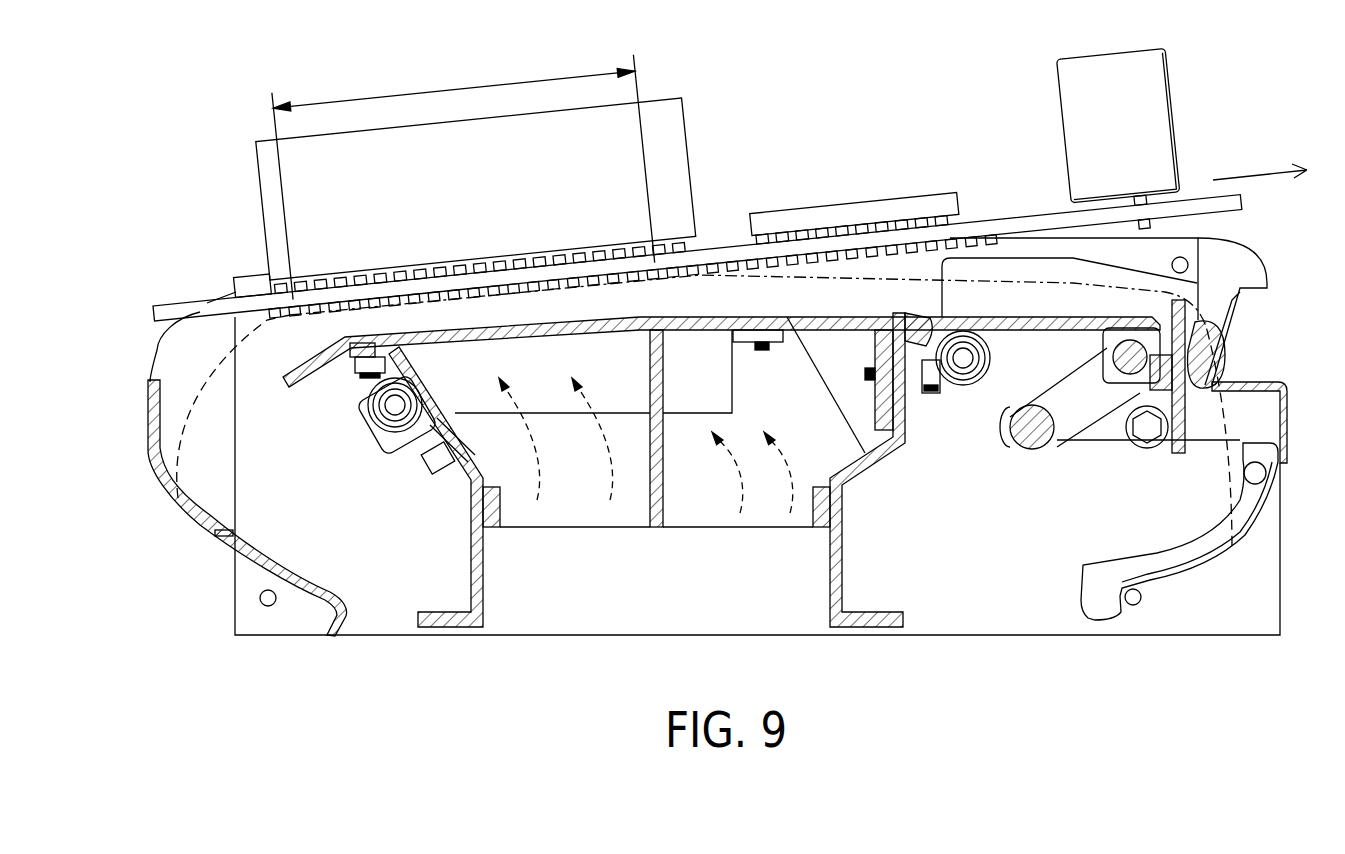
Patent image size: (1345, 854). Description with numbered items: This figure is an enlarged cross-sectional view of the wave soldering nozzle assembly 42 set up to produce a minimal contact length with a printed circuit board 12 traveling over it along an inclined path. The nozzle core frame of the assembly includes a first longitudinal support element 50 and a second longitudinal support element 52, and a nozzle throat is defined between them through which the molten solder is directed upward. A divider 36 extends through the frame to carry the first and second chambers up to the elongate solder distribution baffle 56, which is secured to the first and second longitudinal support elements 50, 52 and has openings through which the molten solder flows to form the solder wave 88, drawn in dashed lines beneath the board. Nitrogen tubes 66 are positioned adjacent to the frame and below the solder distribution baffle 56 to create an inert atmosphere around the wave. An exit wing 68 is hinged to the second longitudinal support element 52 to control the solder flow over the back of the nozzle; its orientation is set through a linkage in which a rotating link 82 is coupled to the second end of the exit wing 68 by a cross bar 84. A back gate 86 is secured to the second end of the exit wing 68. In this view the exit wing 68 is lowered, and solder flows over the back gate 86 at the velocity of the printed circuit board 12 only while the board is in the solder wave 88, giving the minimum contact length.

The printed circuit board 12 is at (987, 228).
The divider 36 is at (658, 507).
The wave soldering nozzle assembly 42 is at (448, 653).
The first longitudinal support element 50 is at (468, 507).
The second longitudinal support element 52 is at (837, 540).
The solder distribution baffle 56 is at (703, 312).
The nitrogen tube 66 is at (372, 417).
The exit wing 68 is at (1050, 327).
The rotating link 82 is at (1078, 388).
The cross bar 84 is at (1012, 447).
The back gate 86 is at (1170, 330).
The solder wave 88 is at (815, 272).